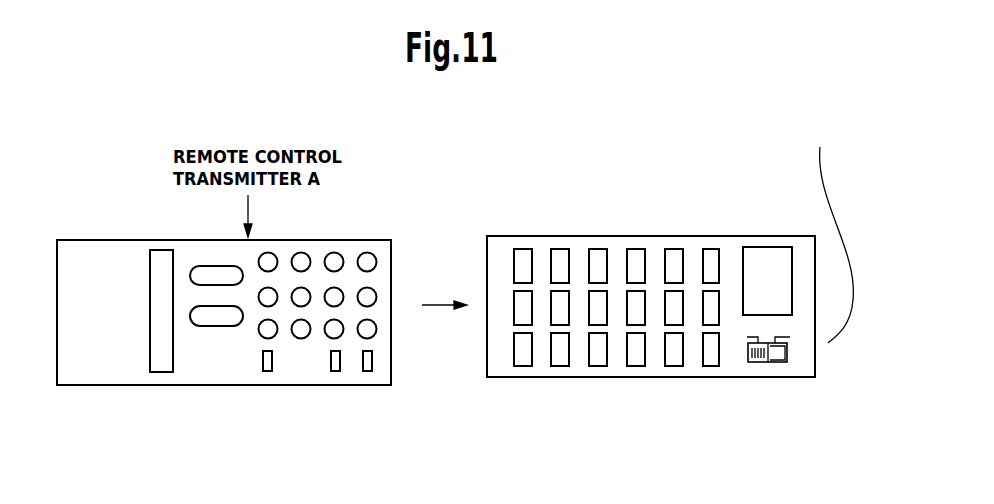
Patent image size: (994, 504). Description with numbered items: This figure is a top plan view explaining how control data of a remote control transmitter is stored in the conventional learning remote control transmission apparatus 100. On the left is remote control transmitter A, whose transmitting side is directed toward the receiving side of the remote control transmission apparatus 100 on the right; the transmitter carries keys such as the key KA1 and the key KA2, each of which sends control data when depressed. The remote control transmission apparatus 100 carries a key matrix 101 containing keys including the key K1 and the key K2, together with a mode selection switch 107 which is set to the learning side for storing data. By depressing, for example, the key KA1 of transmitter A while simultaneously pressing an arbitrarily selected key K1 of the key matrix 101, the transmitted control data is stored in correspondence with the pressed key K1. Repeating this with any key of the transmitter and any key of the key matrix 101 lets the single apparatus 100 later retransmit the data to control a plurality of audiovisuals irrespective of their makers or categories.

The remote control transmission apparatus 100 is at (600, 226).
The key matrix 101 is at (648, 296).
The mode selection switch 107 is at (762, 364).
The key k1 K1 is at (713, 247).
The key k2 K2 is at (703, 298).
The key KA1 is at (367, 252).
The key KA2 is at (371, 295).